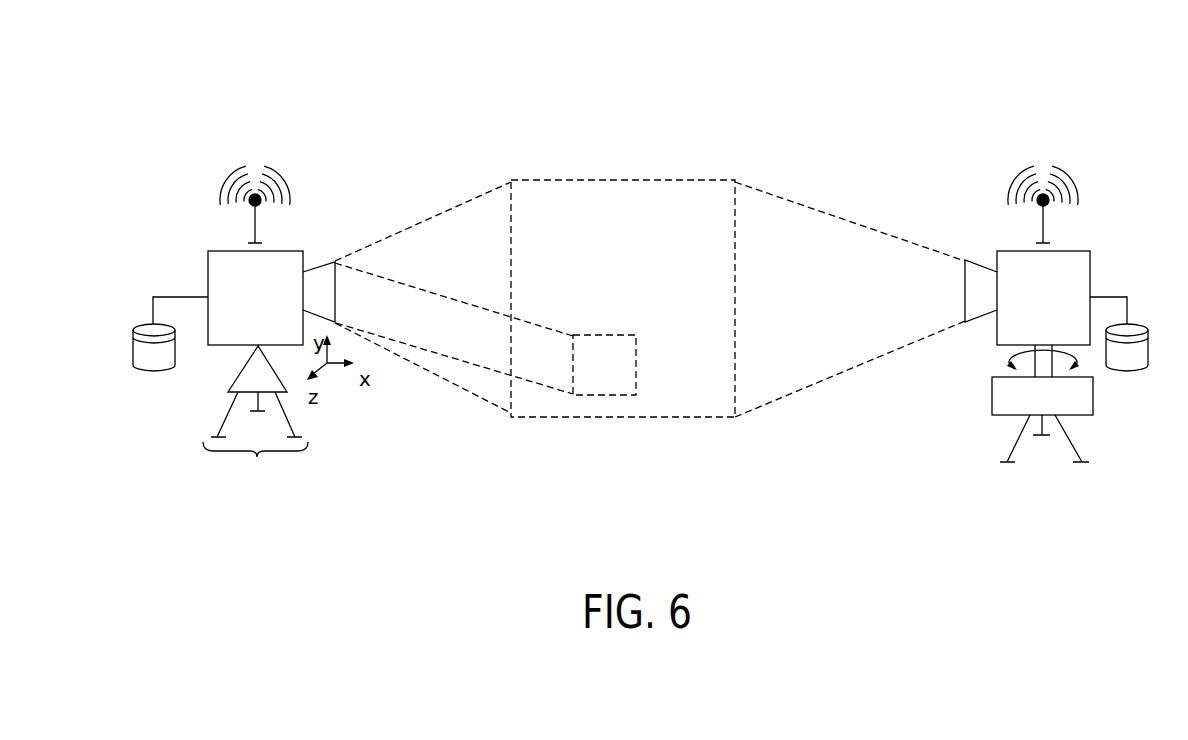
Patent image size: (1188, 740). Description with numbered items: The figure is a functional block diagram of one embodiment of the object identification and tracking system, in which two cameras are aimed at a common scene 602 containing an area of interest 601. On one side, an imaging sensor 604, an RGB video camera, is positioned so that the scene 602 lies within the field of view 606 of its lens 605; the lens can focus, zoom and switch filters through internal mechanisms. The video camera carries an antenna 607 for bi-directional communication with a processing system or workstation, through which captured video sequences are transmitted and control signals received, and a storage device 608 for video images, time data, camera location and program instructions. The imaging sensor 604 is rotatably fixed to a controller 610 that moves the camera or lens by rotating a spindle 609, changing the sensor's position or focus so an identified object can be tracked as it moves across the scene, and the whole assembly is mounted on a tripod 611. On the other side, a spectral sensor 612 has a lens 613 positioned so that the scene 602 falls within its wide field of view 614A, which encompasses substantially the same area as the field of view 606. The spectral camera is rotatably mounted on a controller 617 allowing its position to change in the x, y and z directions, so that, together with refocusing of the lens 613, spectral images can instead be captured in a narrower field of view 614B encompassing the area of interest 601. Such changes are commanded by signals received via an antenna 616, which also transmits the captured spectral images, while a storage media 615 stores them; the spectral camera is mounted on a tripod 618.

The area of interest 601 is at (608, 335).
The scene 602 is at (626, 168).
The imaging sensor 604 is at (1090, 267).
The lens 605 is at (978, 267).
The field of view 606 is at (838, 200).
The antenna 607 is at (1043, 143).
The storage device 608 is at (1135, 371).
The spindle 609 is at (978, 359).
The controller 610 is at (992, 395).
The tripod 611 is at (1043, 466).
The spectral sensor 612 is at (208, 278).
The lens 613 is at (325, 262).
The field of view 614A is at (431, 201).
The field of view 614B is at (425, 290).
The storage media 615 is at (153, 371).
The antenna 616 is at (251, 143).
The controller 617 is at (238, 372).
The tripod 618 is at (255, 442).